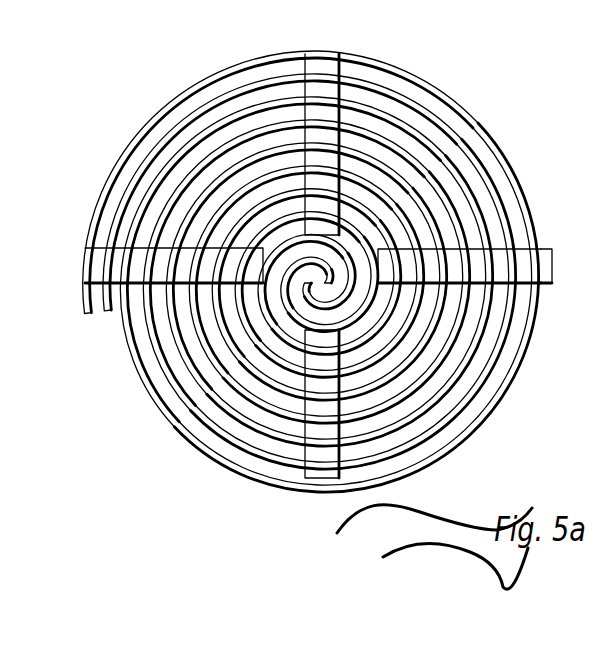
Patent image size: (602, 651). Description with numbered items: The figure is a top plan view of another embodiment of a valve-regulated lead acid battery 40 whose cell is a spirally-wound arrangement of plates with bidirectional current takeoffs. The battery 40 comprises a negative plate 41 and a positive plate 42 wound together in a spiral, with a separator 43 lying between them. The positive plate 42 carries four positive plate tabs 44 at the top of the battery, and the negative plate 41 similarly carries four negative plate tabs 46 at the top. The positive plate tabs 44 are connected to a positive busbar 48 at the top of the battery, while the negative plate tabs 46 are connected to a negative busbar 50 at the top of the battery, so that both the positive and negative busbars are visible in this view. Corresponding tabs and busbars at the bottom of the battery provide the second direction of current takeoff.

The VRLA battery 40 is at (314, 271).
The negative plate 41 is at (145, 121).
The positive plate 42 is at (163, 78).
The separator 43 is at (327, 68).
The positive plate tabs 44 is at (319, 283).
The negative plate tabs 46 is at (483, 262).
The positive busbar 48 is at (117, 260).
The negative busbar 50 is at (523, 265).